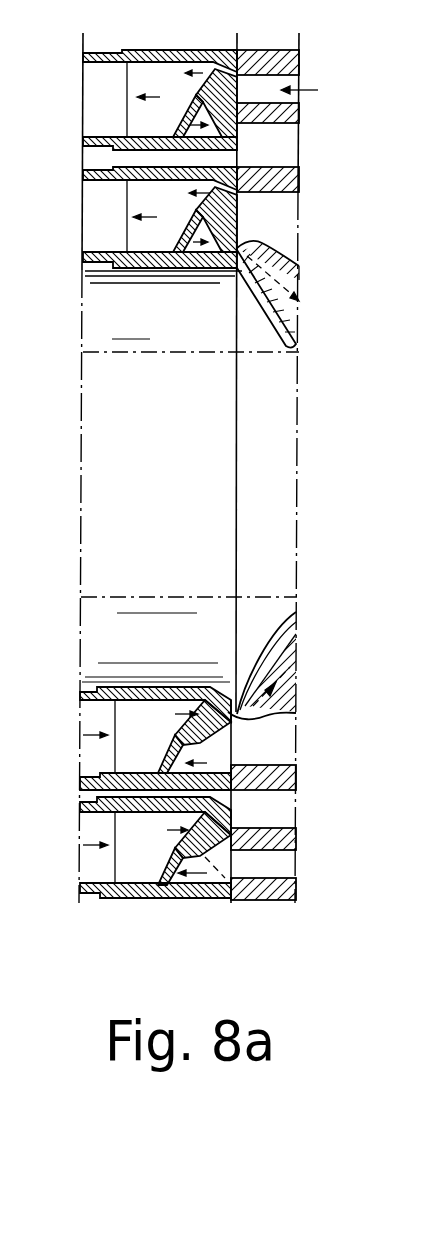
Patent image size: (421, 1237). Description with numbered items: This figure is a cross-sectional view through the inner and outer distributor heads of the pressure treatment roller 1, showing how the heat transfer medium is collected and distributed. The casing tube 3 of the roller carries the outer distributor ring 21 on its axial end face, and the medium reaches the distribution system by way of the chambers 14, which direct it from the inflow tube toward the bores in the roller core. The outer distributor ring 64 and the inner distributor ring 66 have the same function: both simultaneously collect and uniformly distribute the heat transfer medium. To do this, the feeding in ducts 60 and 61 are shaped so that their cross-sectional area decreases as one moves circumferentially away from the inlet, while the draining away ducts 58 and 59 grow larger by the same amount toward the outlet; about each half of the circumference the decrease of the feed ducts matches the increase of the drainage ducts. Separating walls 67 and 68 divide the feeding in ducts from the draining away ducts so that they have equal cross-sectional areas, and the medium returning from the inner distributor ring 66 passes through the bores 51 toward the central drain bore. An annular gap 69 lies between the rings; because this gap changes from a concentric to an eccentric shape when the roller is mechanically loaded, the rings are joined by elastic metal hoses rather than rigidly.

The pressure treatment roller 1 is at (292, 180).
The casing tube 3 is at (247, 62).
The chambers 14 is at (261, 87).
The outer distributor ring 21 is at (295, 322).
The bores 51 is at (298, 277).
The draining away duct 58 is at (122, 97).
The draining away duct 59 is at (113, 213).
The feeding in duct 60 is at (173, 128).
The feeding in duct 61 is at (195, 248).
The outer distributor ring 64 is at (136, 50).
The inner distributor ring 66 is at (122, 272).
The separating wall 67 is at (175, 250).
The separating wall 68 is at (173, 127).
The annular gap 69 is at (285, 152).